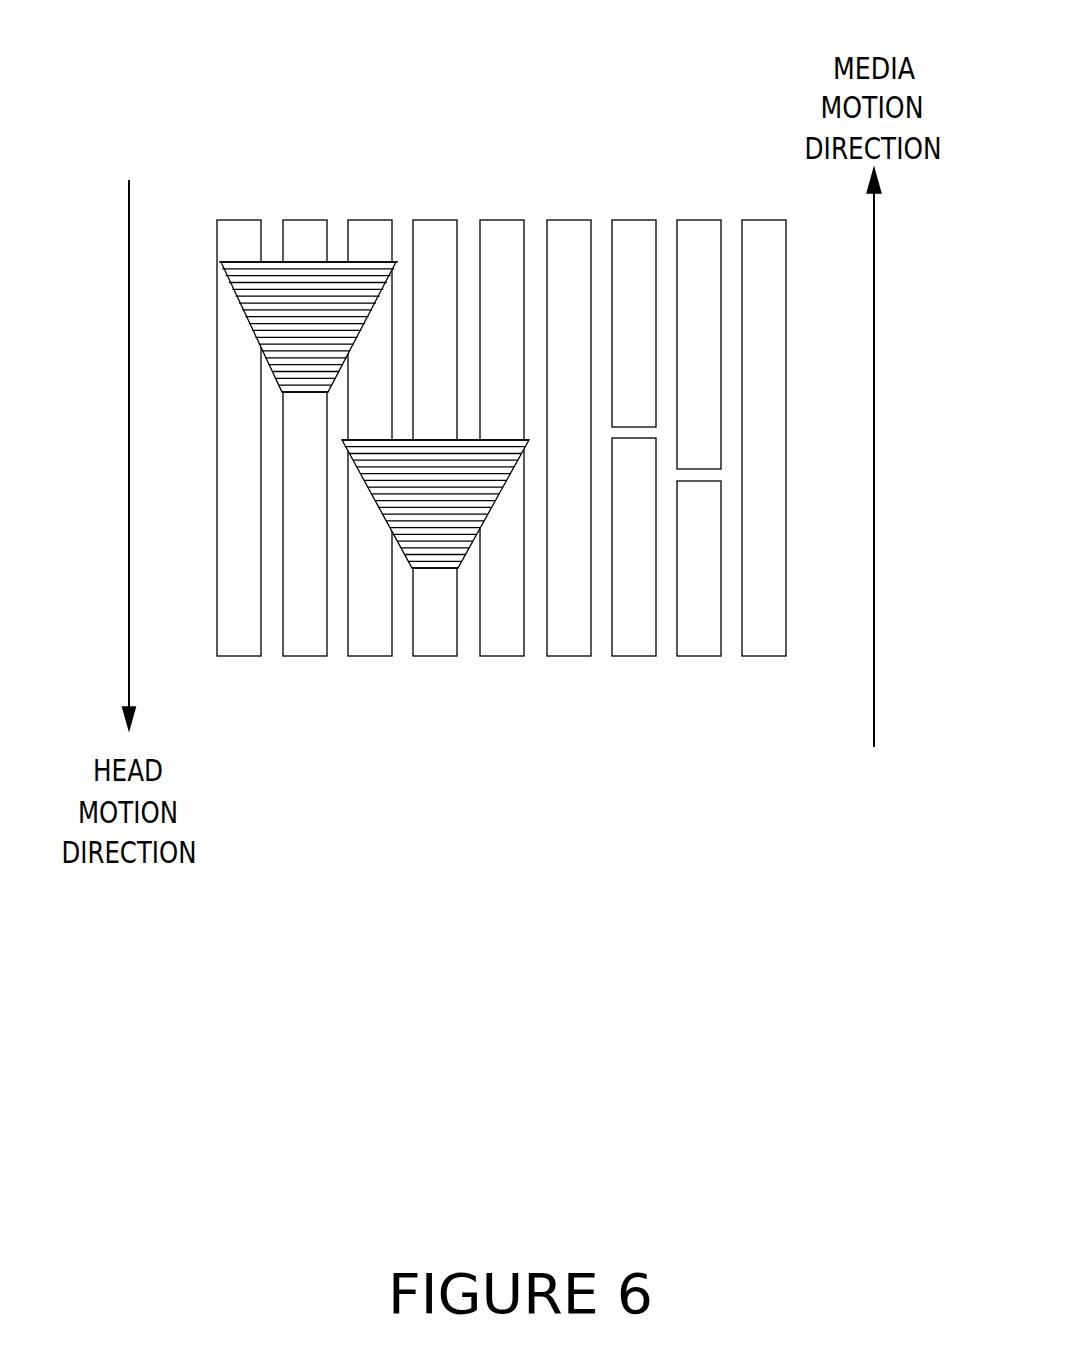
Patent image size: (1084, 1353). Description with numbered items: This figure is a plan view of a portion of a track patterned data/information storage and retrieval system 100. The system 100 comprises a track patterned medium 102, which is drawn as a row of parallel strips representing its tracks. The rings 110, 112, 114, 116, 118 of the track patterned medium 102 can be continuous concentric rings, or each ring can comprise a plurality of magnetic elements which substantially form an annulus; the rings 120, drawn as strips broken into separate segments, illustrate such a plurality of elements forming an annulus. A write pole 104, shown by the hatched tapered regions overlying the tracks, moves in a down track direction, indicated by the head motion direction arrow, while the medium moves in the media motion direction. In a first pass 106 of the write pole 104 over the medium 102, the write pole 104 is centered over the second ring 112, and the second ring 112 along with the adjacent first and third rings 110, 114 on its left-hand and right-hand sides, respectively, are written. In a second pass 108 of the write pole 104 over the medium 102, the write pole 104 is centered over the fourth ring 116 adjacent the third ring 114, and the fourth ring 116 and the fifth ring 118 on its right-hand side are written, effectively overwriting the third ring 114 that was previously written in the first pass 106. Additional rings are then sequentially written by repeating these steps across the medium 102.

The track patterned data/information storage and retrieval system 100 is at (263, 64).
The track patterned medium 102 is at (596, 180).
The write pole 104 is at (243, 320).
The 1st pass 106 is at (212, 687).
The 2nd pass 108 is at (342, 763).
The first ring 110 is at (239, 222).
The second ring 112 is at (306, 222).
The third ring 114 is at (370, 222).
The fourth ring 116 is at (437, 222).
The fifth ring 118 is at (502, 222).
The rings 120 is at (710, 220).